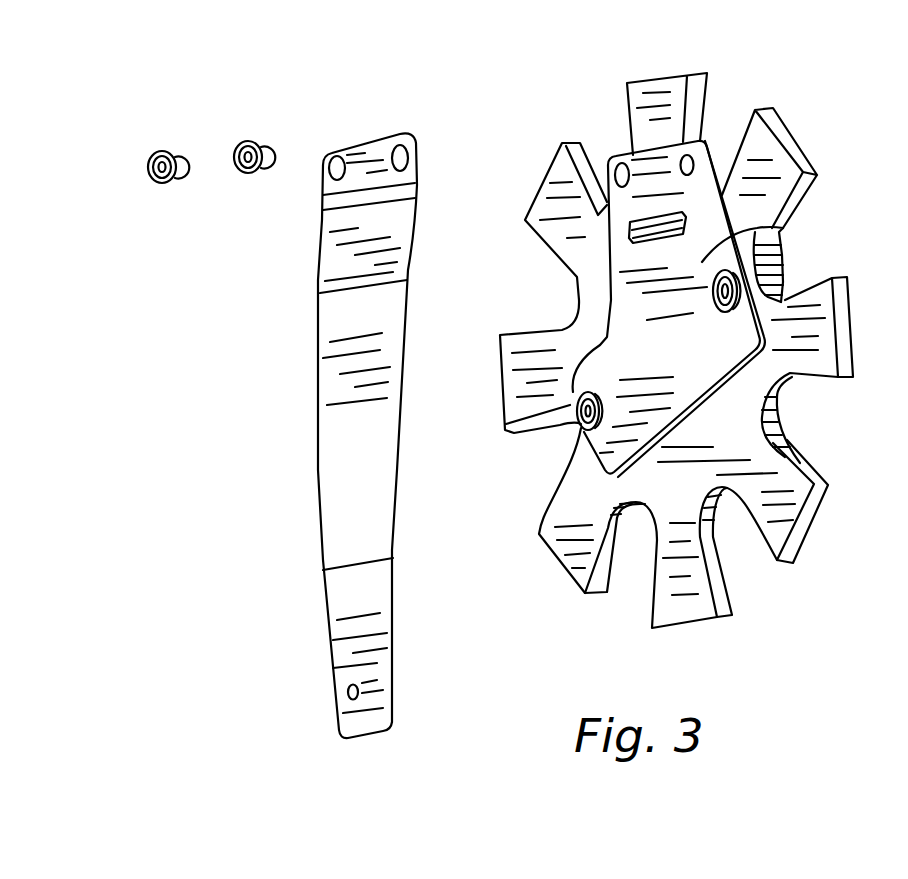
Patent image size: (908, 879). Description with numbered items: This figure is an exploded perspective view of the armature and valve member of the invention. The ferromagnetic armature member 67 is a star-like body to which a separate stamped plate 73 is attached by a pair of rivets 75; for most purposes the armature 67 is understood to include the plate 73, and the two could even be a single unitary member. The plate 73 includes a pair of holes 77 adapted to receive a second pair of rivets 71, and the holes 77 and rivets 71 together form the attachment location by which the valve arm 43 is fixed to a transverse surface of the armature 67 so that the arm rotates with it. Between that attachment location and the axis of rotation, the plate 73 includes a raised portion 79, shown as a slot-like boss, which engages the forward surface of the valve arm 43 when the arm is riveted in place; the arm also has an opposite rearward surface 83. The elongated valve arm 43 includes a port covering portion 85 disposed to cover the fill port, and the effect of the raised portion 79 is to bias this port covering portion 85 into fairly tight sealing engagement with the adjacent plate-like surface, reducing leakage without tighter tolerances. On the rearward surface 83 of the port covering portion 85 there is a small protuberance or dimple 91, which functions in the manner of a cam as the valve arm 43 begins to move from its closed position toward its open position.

The valve arm 43 is at (352, 443).
The armature member 67 is at (783, 497).
The rivets 71 is at (173, 146).
The stamped plate 73 is at (789, 231).
The rivets 75 is at (727, 313).
The holes 77 is at (623, 162).
The raised portion 79 is at (650, 241).
The rearward surface 83 is at (347, 525).
The port covering portion 85 is at (365, 627).
The dimple 91 is at (357, 703).